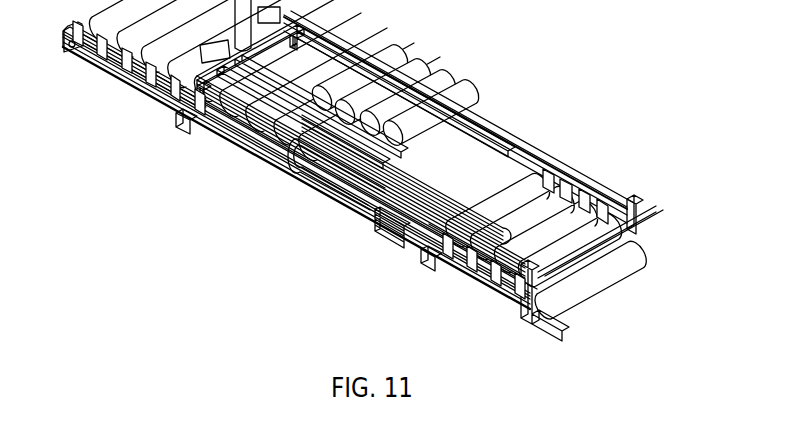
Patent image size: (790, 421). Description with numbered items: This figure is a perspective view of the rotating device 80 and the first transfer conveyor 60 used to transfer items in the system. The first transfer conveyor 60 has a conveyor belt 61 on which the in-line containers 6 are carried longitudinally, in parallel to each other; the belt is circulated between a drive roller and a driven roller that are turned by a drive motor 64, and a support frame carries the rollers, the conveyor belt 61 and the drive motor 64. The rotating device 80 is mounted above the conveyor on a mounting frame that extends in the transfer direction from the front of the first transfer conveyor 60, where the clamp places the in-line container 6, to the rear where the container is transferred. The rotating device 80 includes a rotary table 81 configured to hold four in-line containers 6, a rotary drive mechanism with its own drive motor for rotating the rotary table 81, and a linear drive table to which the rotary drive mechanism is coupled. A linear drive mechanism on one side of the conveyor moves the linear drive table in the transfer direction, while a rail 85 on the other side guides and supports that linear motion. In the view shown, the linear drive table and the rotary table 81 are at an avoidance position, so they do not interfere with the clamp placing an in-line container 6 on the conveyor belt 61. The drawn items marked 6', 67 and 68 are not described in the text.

The in-line container 6 is at (348, 160).
The conveyor rollers 6' is at (367, 159).
The first transfer conveyor 60 is at (278, 183).
The conveyor belt 61 is at (633, 220).
The drive motor 64 is at (390, 233).
The rail support bracket 67 is at (222, 135).
The cable carrier 68 is at (318, 185).
The rotating device 80 is at (487, 110).
The rotary table 81 is at (263, 160).
The rail 85 is at (547, 152).